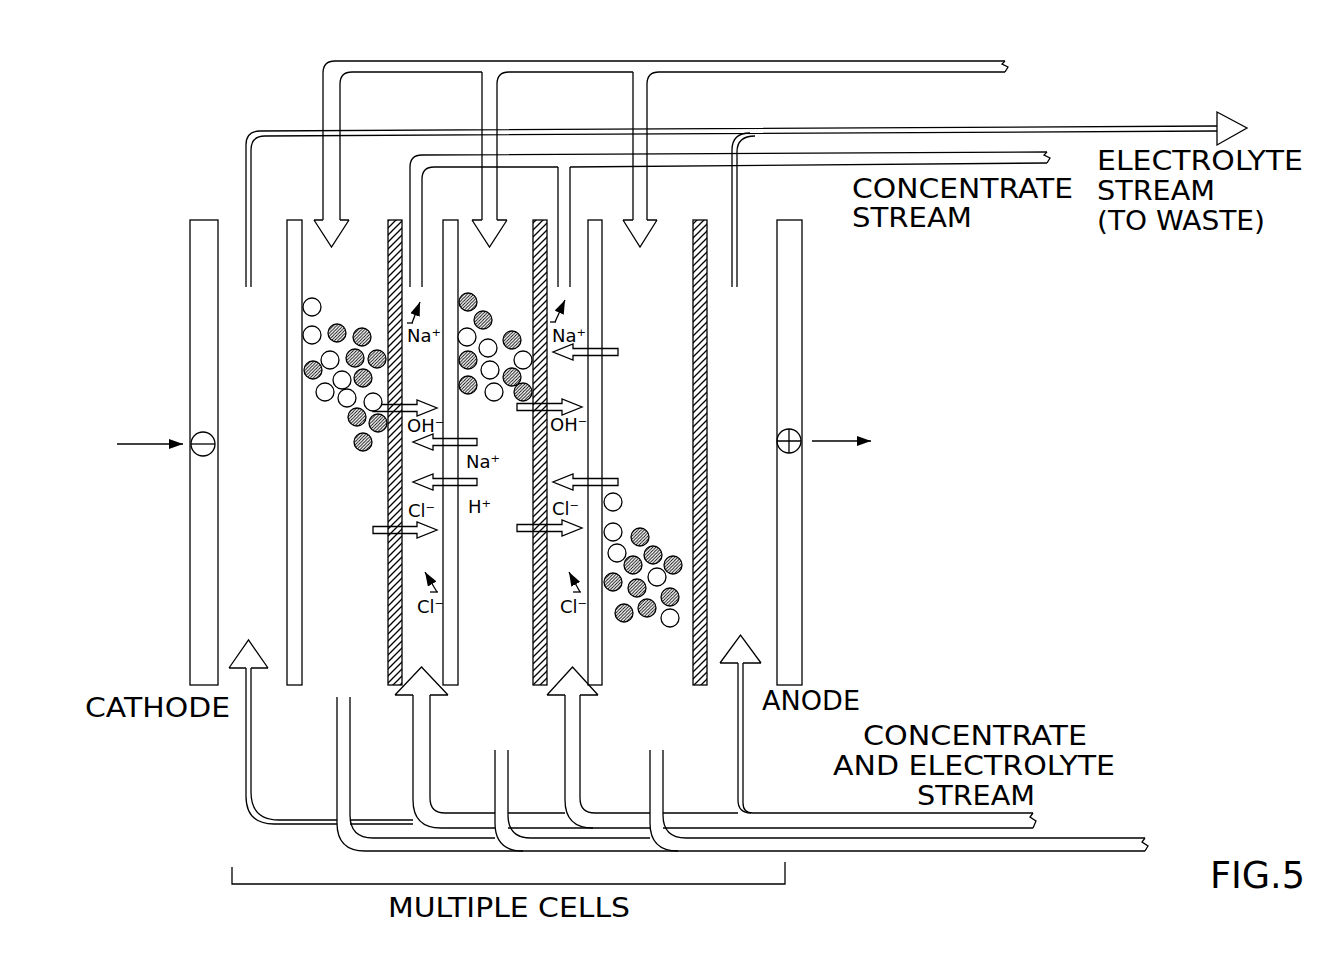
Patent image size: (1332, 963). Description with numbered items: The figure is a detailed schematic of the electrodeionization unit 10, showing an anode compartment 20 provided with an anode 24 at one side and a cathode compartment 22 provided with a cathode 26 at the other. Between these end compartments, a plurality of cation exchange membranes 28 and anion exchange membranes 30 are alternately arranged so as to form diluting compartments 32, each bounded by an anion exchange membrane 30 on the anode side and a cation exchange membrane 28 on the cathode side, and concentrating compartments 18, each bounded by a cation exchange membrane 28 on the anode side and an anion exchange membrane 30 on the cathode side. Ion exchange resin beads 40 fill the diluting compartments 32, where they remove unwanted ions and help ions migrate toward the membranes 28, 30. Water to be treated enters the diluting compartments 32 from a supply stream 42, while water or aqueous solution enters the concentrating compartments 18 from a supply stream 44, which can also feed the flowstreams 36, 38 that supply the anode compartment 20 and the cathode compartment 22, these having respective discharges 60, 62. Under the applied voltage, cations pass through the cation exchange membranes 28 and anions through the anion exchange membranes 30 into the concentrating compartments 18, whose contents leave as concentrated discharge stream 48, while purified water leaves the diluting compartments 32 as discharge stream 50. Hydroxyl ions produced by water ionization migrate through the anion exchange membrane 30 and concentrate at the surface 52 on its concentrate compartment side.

The electrodeionization unit 10 is at (238, 97).
The concentrating compartments 18 is at (428, 253).
The anode compartment 20 is at (755, 386).
The cathode compartment 22 is at (267, 434).
The anode 24 is at (802, 378).
The cathode 26 is at (188, 574).
The cation exchange membranes 28 is at (302, 605).
The anion exchange membranes 30 is at (532, 300).
The diluting compartments 32 is at (357, 662).
The flowstream 36 is at (745, 717).
The flowstream 38 is at (247, 755).
The ion exchange resin beads 40 is at (344, 316).
The supply stream 42 is at (728, 60).
The supply stream 44 is at (716, 812).
The discharge stream 48 is at (820, 167).
The discharge stream 50 is at (958, 850).
The surface 52 is at (548, 458).
The discharge 60 is at (230, 197).
The discharge 62 is at (738, 174).